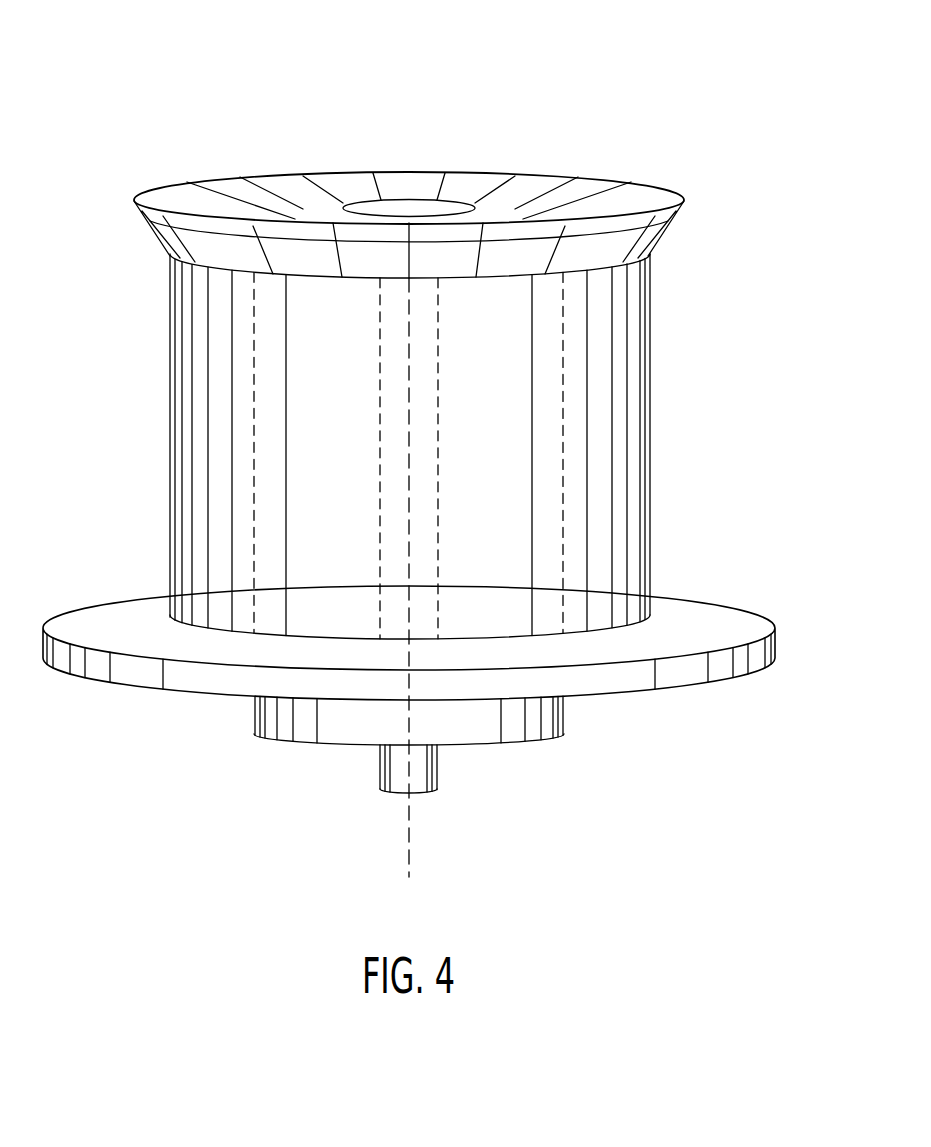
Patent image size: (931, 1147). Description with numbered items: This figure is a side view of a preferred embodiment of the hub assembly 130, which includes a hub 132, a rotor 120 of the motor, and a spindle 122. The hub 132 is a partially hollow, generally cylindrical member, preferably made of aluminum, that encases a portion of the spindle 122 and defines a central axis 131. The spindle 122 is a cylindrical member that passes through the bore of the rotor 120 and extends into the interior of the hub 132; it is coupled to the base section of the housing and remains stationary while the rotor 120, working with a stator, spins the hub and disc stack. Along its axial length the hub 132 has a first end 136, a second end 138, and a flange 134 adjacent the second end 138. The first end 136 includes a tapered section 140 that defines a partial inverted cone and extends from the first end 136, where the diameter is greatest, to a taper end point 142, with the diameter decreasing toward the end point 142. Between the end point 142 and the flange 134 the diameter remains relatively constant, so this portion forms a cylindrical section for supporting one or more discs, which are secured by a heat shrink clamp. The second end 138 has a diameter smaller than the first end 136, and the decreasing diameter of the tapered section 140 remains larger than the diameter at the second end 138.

The hub assembly 130 is at (382, 120).
The first end 136 is at (690, 192).
The tapered section 140 is at (163, 236).
The taper end point 142 is at (652, 254).
The hub 132 is at (598, 463).
The flange 134 is at (692, 627).
The second end 138 is at (163, 614).
The rotor 120 is at (513, 733).
The spindle 122 is at (401, 795).
The central axis 131 is at (410, 838).